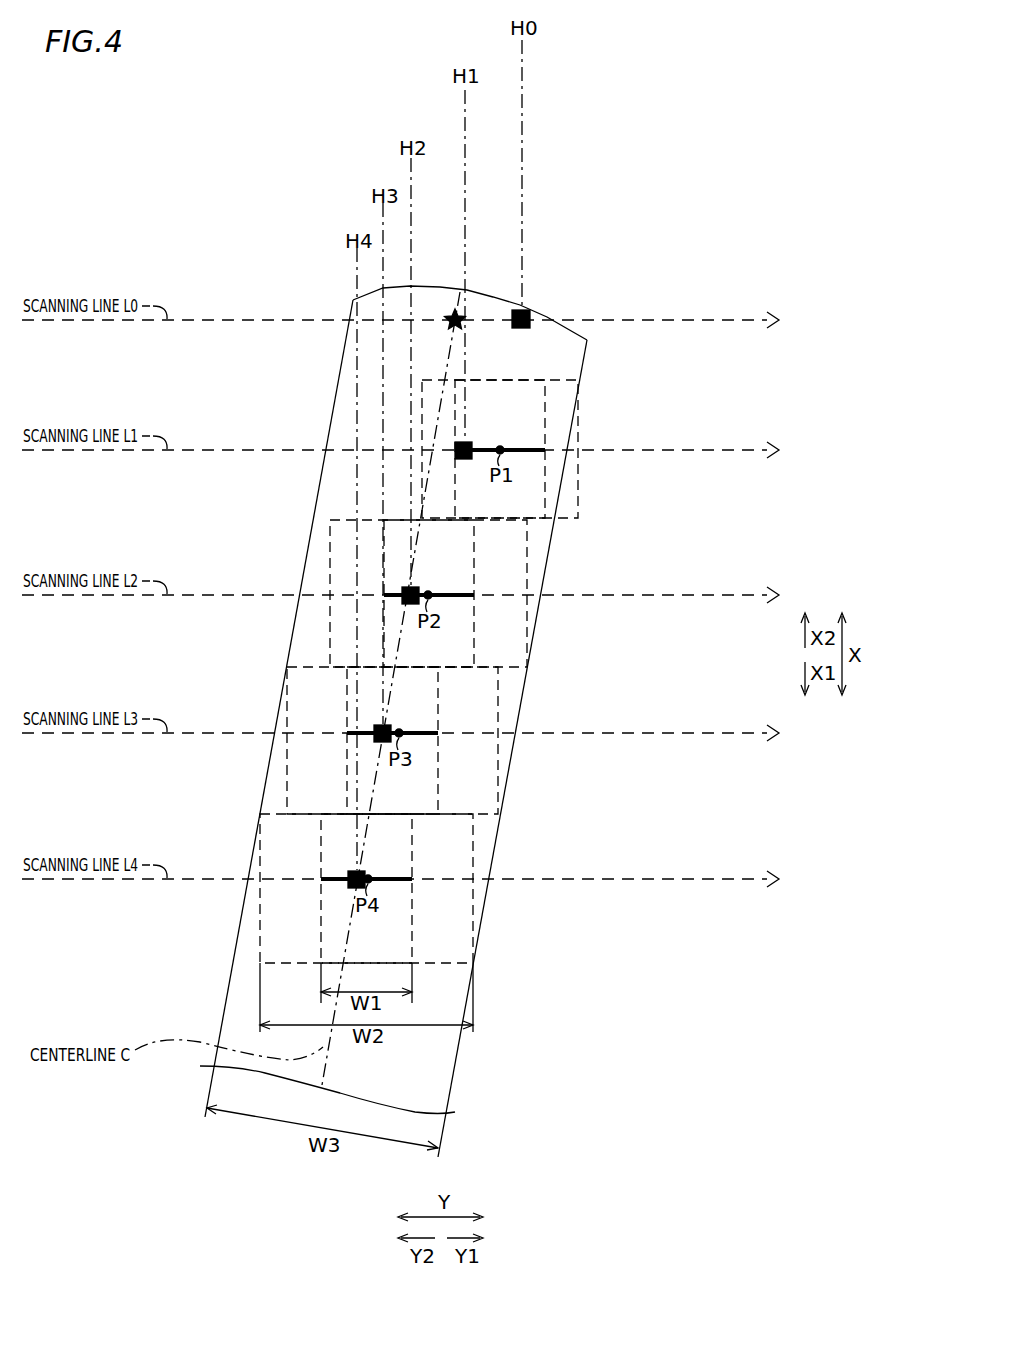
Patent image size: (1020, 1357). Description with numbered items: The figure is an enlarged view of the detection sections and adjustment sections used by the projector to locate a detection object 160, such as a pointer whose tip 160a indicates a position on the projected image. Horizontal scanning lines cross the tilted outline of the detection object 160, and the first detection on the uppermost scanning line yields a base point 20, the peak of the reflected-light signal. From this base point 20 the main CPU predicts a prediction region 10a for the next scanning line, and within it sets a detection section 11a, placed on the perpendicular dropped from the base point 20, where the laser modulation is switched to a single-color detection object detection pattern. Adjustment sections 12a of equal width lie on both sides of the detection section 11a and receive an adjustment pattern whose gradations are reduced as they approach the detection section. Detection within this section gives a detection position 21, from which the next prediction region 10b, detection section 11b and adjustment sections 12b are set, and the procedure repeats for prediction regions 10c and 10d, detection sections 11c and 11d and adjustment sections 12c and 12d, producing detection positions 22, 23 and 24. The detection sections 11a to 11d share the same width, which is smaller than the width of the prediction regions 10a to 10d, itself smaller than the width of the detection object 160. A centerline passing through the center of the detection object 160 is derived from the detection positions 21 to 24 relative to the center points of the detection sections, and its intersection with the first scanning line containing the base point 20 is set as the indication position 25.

The detection object 160 is at (457, 1057).
The tip of the detection object 160a is at (468, 286).
The base point 20 is at (528, 311).
The detection position 21 is at (469, 441).
The detection position 22 is at (413, 586).
The detection position 23 is at (388, 724).
The detection position 24 is at (359, 870).
The indication position 25 is at (450, 308).
The prediction region 10a is at (499, 381).
The prediction region 10b is at (527, 519).
The prediction region 10c is at (498, 667).
The prediction region 10d is at (473, 814).
The detection section 11a is at (512, 446).
The detection section 11b is at (460, 592).
The detection section 11c is at (422, 728).
The detection section 11d is at (393, 872).
The adjustment section 12a is at (440, 466).
The adjustment section 12b is at (372, 609).
The adjustment section 12c is at (327, 749).
The adjustment section 12d is at (302, 898).